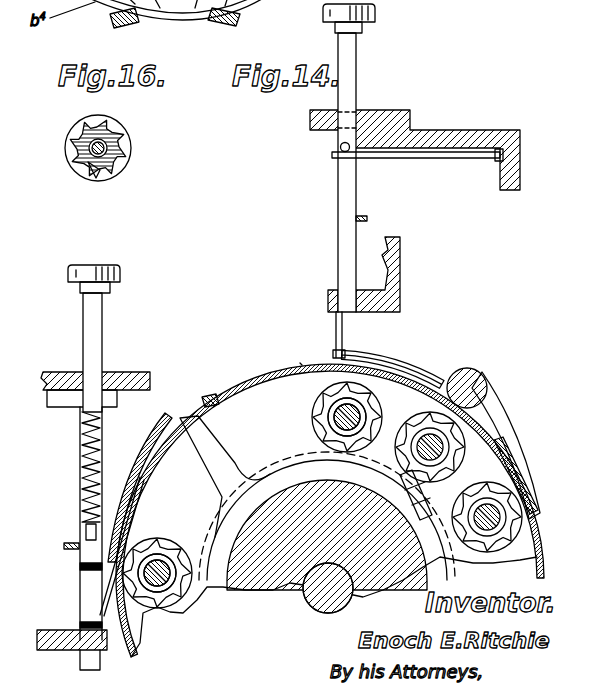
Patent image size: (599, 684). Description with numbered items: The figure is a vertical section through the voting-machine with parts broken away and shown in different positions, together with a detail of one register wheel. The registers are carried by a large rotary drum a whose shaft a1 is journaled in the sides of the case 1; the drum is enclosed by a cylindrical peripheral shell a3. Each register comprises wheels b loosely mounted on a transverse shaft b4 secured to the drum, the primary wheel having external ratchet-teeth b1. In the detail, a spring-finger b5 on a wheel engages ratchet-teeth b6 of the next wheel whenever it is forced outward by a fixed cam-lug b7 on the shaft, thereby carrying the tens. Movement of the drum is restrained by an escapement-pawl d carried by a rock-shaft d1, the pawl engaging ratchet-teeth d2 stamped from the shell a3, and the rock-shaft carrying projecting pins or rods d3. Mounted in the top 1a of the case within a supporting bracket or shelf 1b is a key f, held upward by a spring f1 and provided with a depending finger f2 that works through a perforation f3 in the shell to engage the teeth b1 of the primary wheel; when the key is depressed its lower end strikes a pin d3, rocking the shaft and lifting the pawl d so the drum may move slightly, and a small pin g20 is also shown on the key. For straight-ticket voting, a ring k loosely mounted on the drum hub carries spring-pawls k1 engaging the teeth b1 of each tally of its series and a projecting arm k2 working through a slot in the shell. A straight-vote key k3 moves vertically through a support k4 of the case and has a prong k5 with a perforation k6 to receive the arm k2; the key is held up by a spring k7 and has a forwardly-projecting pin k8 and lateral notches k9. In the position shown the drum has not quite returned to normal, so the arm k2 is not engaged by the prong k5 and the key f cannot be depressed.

In FIG. 14, the case 1 is at (58, 375).
In FIG. 14, the top of the case 1a is at (513, 130).
In FIG. 14, the supporting bracket or shelf 1b is at (400, 272).
In FIG. 14, the key f is at (350, 100).
In FIG. 14, the spring f1 is at (447, 157).
In FIG. 14, the depending finger f2 is at (340, 336).
In FIG. 14, the perforation f3 is at (400, 393).
In FIG. 14, the pin g20 is at (368, 219).
In FIG. 14, the escapement-pawl d is at (497, 427).
In FIG. 14, the rock-shaft d1 is at (473, 367).
In FIG. 14, the ratchet-teeth d2 is at (209, 388).
In FIG. 14, the projecting pins or rods d3 is at (402, 388).
In FIG. 14, the rotary drum a is at (334, 568).
In FIG. 14, the shaft a1 is at (318, 598).
In FIG. 14, the cylindrical peripheral shell a3 is at (297, 360).
In FIG. 16, the wheel b is at (143, 165).
In FIG. 14, the wheel b is at (311, 440).
In FIG. 14, the external ratchet-teeth b1 is at (328, 418).
In FIG. 14, the transverse shaft b4 is at (363, 412).
In FIG. 16, the spring-finger b5 is at (113, 126).
In FIG. 16, the ratchet-teeth b6 is at (100, 176).
In FIG. 16, the fixed cam-lug b7 is at (76, 143).
In FIG. 14, the ring or collar k is at (258, 490).
In FIG. 14, the spring-pawl k1 is at (366, 462).
In FIG. 14, the projecting arm k2 is at (212, 452).
In FIG. 14, the straight-vote key k3 is at (92, 363).
In FIG. 14, the support k4 is at (65, 400).
In FIG. 14, the prong k5 is at (123, 490).
In FIG. 14, the perforation k6 is at (150, 440).
In FIG. 14, the spring k7 is at (80, 468).
In FIG. 14, the forwardly-projecting pin k8 is at (64, 546).
In FIG. 14, the lateral notch k9 is at (79, 600).